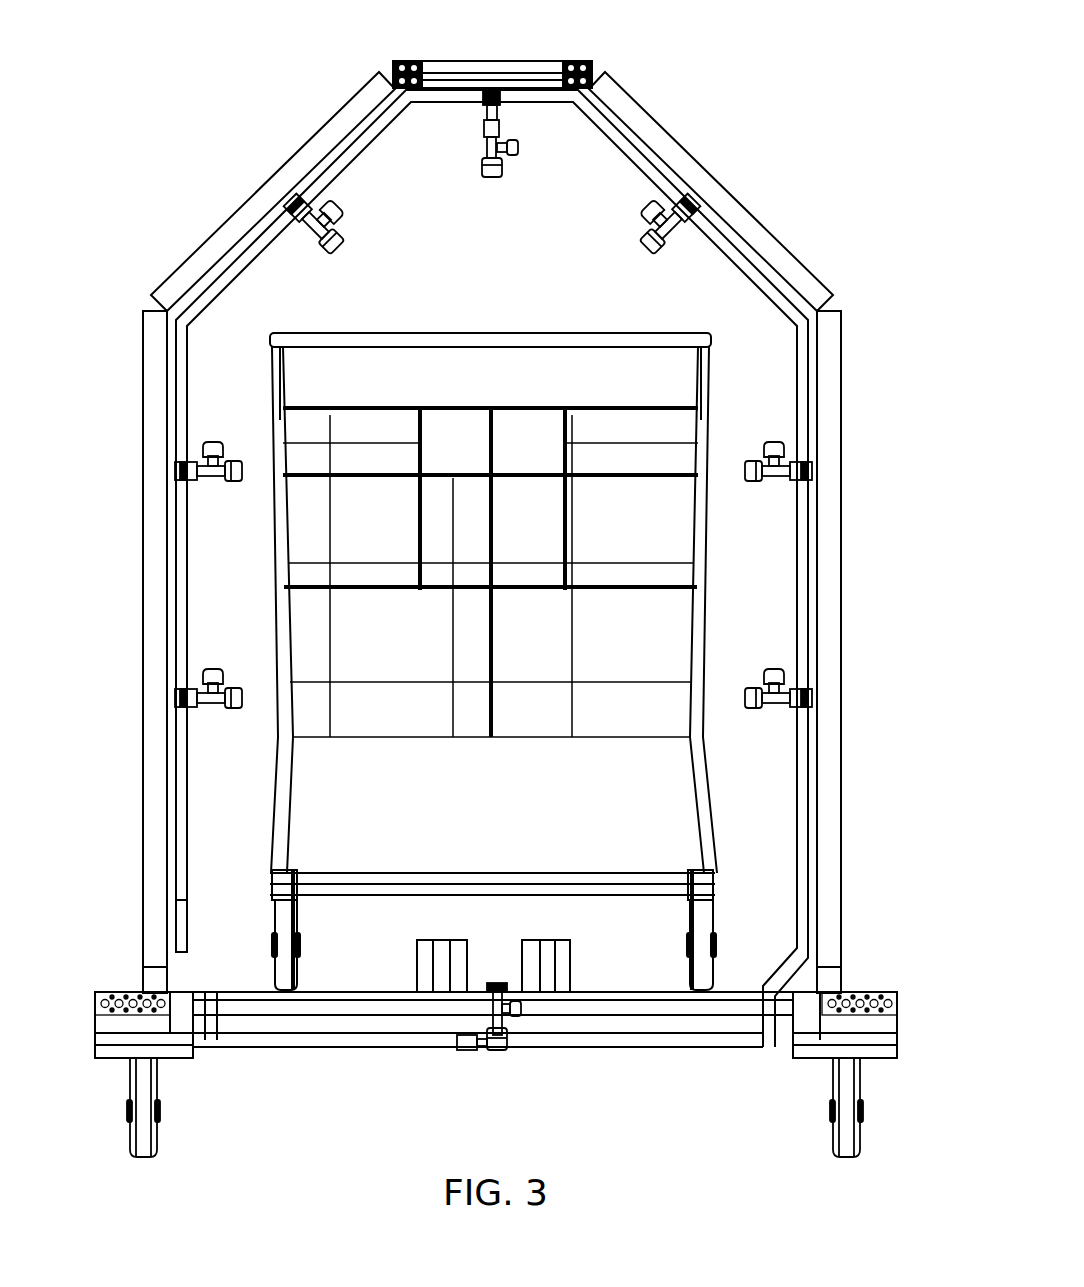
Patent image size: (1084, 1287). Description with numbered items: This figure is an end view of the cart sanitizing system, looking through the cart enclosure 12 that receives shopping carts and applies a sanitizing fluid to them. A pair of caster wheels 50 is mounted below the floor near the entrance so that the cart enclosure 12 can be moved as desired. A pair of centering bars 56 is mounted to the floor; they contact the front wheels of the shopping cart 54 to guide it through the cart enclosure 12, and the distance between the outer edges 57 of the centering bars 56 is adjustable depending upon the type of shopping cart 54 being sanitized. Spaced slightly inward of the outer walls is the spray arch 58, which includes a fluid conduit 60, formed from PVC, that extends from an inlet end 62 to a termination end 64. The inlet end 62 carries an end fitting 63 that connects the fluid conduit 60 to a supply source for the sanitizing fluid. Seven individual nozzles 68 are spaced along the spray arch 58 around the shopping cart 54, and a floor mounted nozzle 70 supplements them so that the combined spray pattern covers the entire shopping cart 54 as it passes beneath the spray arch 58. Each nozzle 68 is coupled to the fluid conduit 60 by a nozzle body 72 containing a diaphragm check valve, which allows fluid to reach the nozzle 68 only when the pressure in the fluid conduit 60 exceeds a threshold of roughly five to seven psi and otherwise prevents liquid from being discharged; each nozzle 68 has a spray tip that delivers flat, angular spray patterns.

The cart enclosure 12 is at (736, 132).
The caster wheels 50 is at (160, 1137).
The shopping cart 54 is at (441, 405).
The centering bars 56 is at (450, 945).
The outer edges 57 is at (417, 975).
The spray arch 58 is at (790, 257).
The fluid conduit 60 is at (618, 138).
The inlet end 62 is at (460, 1056).
The end fitting 63 is at (457, 1043).
The termination end 64 is at (180, 938).
The nozzles 68 is at (338, 233).
The floor mounted nozzle 70 is at (487, 980).
The nozzle body 72 is at (318, 234).